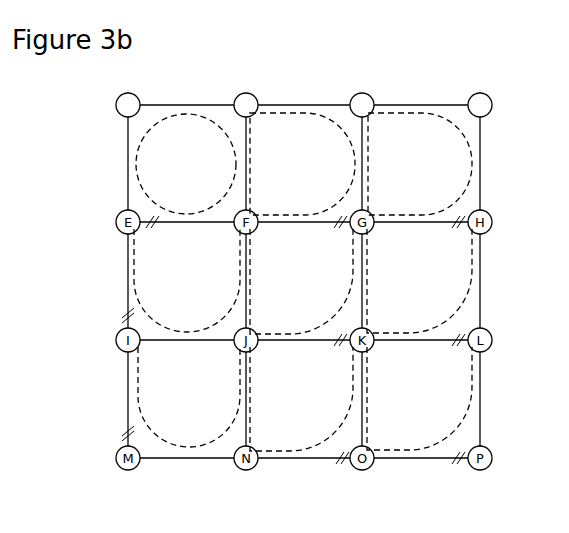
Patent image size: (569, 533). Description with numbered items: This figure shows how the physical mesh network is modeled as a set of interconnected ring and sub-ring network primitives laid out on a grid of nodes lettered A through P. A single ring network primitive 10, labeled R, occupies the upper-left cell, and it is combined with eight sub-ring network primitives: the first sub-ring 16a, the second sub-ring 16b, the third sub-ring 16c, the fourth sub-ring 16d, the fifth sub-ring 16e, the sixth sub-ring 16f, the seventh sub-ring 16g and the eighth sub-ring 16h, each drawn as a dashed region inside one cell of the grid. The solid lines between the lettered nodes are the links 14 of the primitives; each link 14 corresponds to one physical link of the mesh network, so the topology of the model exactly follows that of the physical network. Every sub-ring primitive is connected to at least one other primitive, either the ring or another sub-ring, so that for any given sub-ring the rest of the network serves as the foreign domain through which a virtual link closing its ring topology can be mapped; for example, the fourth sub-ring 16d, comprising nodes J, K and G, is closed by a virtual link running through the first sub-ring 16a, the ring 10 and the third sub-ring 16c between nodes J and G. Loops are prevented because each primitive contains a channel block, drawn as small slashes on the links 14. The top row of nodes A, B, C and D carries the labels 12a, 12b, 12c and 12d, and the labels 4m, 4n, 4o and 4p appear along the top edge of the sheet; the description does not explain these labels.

The column connection line 4m is at (178, 0).
The column connection line 4n is at (265, 0).
The column connection line 4o is at (344, 0).
The column connection line 4p is at (426, 0).
The ring network primitive 10 is at (177, 193).
The node A 12a is at (133, 93).
The node B 12b is at (249, 93).
The node C 12c is at (365, 93).
The node D 12d is at (484, 93).
The link 14 is at (189, 104).
The sub-ring network primitive SR-A 16a is at (272, 207).
The sub-ring network primitive SR-B 16b is at (399, 203).
The sub-ring network primitive SR-C 16c is at (175, 308).
The sub-ring network primitive SR-D 16d is at (286, 312).
The sub-ring network primitive SR-E 16e is at (407, 306).
The sub-ring network primitive SR-F 16f is at (178, 418).
The sub-ring network primitive SR-G 16g is at (290, 418).
The sub-ring network primitive SR-H 16h is at (412, 416).